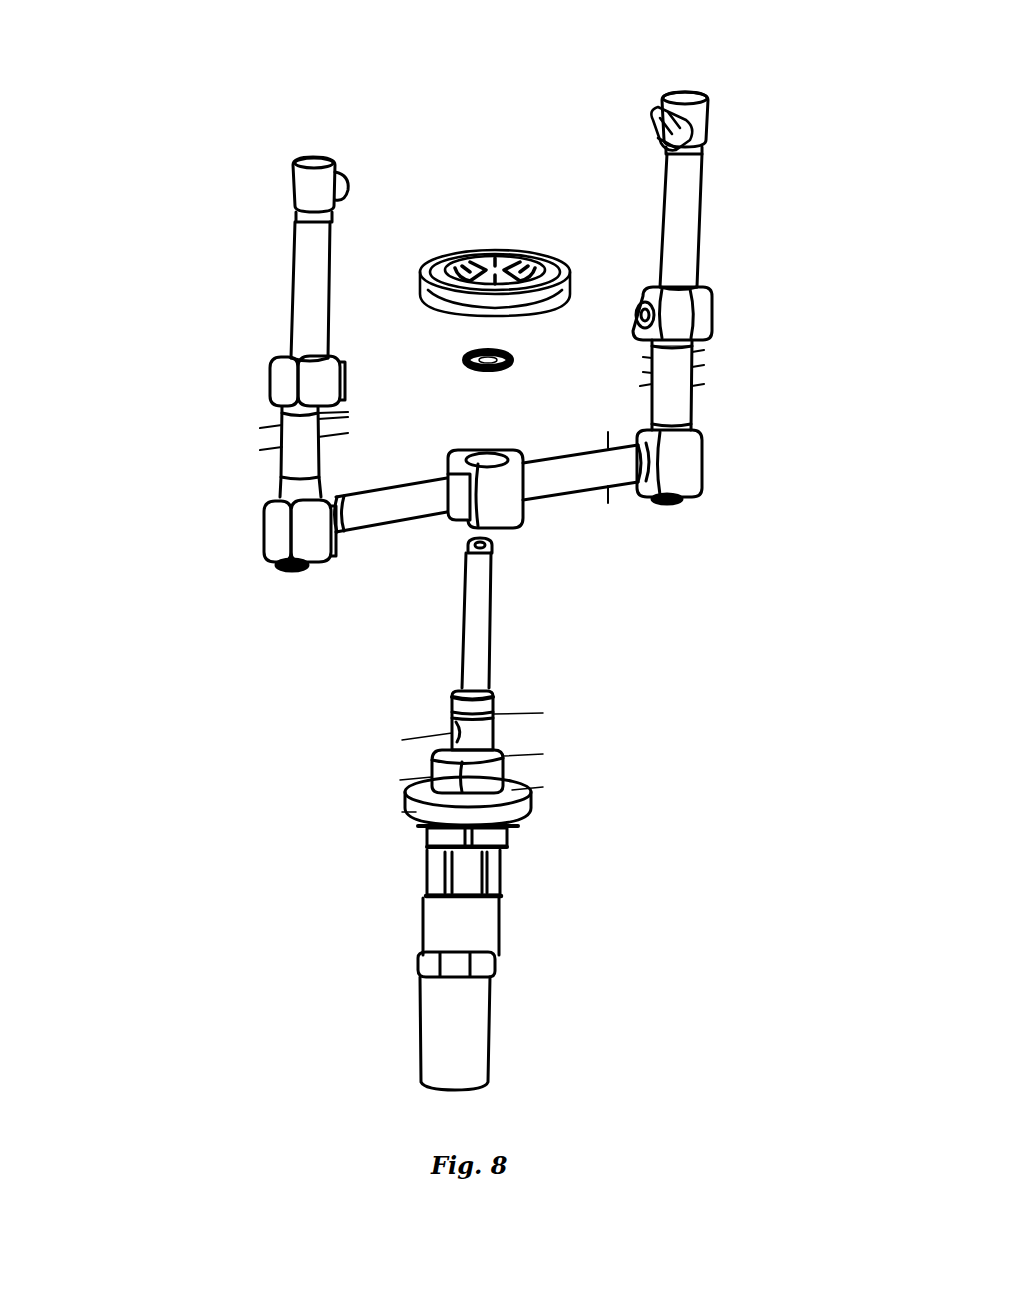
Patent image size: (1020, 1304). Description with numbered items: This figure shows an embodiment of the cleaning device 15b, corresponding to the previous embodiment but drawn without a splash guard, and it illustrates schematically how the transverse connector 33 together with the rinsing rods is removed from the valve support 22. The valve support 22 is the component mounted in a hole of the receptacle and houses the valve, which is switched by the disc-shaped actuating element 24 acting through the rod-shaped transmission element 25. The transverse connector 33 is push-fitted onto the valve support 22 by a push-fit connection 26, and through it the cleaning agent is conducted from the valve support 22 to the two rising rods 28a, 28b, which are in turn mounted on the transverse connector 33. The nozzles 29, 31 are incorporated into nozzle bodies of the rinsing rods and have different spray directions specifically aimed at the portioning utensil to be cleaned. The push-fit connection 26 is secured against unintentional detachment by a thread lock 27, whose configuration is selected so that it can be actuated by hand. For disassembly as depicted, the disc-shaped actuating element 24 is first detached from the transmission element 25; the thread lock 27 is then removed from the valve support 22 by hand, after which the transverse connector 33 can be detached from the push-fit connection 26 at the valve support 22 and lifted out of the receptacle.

The cleaning device 15b is at (170, 92).
The valve support 22 is at (465, 927).
The disc-shaped actuating element 24 is at (500, 258).
The transmission element 25 is at (478, 652).
The push-fit connection 26 is at (470, 726).
The thread lock 27 is at (467, 370).
The rising rod 28a is at (683, 230).
The rising rod 28b is at (303, 297).
The nozzle 29 is at (650, 130).
The nozzle 31 is at (652, 358).
The transverse connector 33 is at (567, 472).